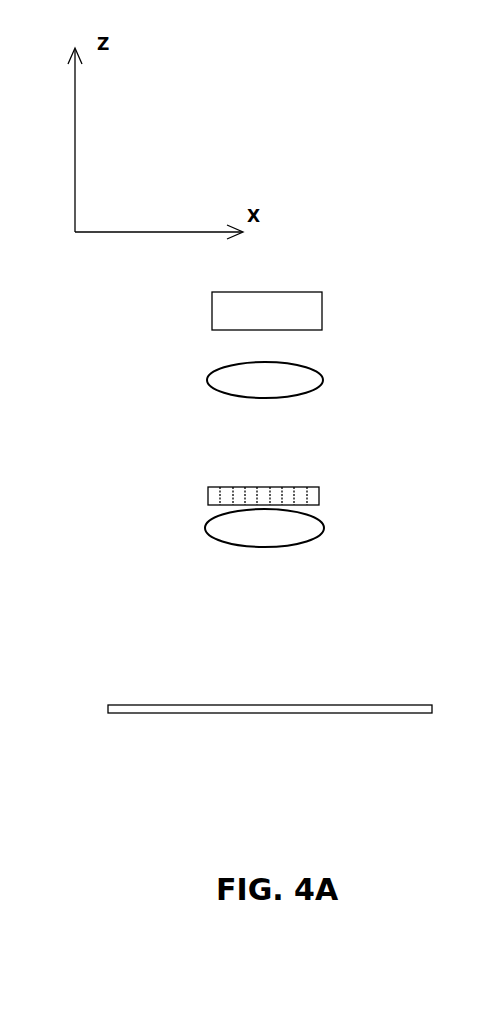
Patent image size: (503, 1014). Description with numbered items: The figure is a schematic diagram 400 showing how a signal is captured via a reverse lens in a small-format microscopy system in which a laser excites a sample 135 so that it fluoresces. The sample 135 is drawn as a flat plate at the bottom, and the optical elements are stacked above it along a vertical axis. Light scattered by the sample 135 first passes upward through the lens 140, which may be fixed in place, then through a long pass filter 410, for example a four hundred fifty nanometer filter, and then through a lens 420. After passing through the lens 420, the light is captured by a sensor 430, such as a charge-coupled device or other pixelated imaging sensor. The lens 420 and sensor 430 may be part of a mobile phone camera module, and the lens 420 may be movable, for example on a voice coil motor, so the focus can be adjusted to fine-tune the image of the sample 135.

The schematic diagram 400 is at (390, 93).
The sensor 430 is at (212, 308).
The lens 420 is at (208, 380).
The long pass filter 410 is at (209, 490).
The lens 140 is at (325, 529).
The sample 135 is at (395, 705).